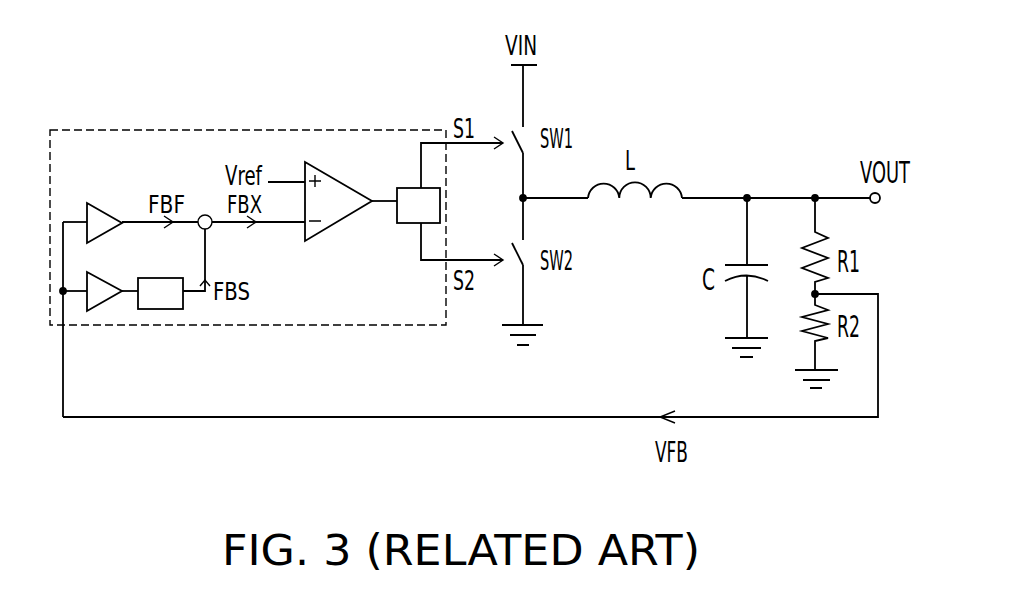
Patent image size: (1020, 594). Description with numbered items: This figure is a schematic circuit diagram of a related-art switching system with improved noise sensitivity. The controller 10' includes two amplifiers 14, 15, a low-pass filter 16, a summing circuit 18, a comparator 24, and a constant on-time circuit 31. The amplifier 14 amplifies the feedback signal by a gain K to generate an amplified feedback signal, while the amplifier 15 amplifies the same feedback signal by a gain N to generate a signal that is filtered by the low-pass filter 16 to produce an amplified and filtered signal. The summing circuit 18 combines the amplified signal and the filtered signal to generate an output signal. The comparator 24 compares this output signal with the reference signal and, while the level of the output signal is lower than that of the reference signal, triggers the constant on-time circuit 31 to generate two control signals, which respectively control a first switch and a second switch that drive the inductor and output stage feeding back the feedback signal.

The controller 10' is at (248, 207).
The amplifier 14 is at (107, 213).
The amplifier 15 is at (107, 283).
The low-pass filter 16 is at (175, 307).
The summing circuit 18 is at (211, 229).
The comparator 24 is at (337, 178).
The constant on-time circuit 31 is at (432, 220).